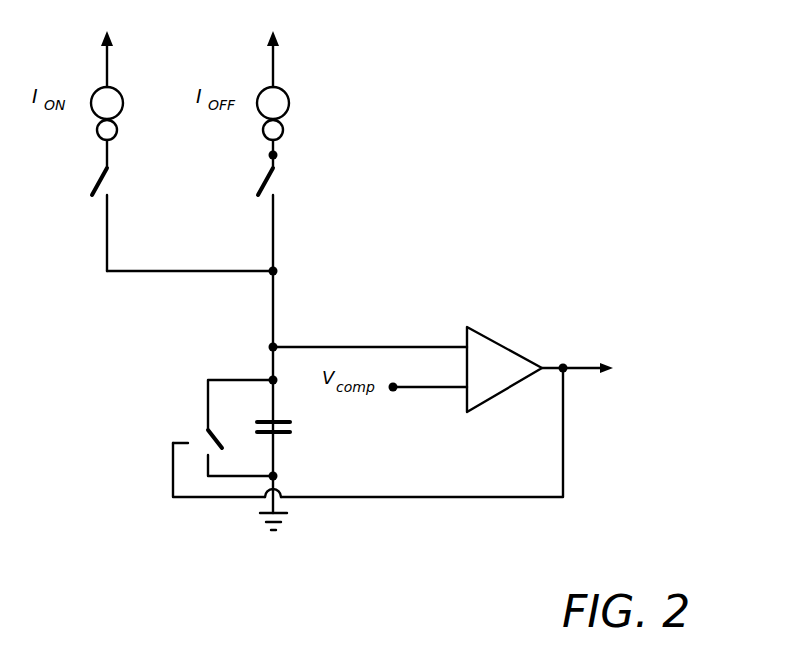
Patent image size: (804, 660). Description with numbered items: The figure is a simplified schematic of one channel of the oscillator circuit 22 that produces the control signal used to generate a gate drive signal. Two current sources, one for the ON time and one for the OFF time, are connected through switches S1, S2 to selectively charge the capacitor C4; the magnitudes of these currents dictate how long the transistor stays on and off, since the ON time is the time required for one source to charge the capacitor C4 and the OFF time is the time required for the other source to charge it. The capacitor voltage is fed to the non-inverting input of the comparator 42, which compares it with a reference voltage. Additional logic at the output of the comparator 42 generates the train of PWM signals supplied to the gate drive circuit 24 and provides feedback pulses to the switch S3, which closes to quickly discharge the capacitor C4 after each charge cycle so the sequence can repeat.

The oscillator circuit 22 is at (585, 154).
The comparator 42 is at (511, 349).
The gate drive circuit 24 is at (668, 367).
The switch S1 is at (77, 184).
The switch S2 is at (288, 184).
The switch S3 is at (223, 428).
The capacitor C4 is at (288, 433).